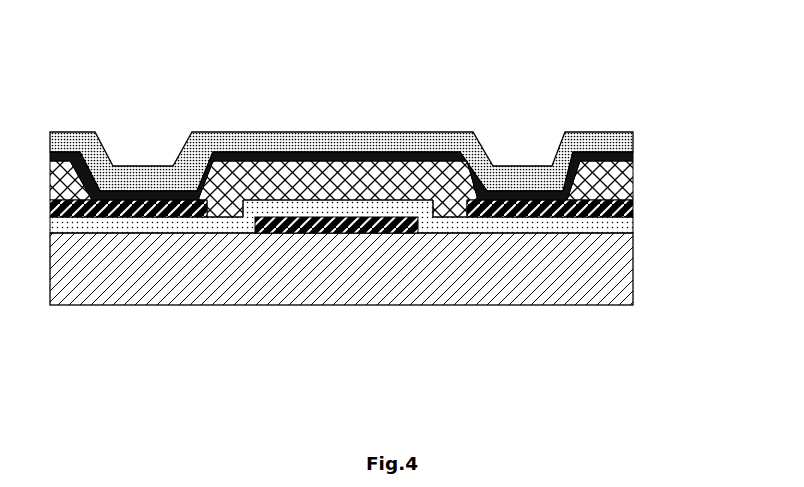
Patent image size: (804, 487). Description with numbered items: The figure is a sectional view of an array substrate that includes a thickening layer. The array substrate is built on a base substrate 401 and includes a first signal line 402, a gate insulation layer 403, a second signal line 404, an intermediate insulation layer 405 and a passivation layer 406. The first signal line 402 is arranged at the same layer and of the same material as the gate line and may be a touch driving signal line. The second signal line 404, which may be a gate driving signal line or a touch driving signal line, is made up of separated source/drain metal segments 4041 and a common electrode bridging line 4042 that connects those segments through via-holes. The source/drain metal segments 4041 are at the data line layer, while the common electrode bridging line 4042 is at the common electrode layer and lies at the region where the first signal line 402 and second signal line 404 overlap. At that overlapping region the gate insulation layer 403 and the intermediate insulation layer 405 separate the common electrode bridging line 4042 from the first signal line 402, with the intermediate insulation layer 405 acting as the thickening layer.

The base substrate 401 is at (617, 272).
The first signal line 402 is at (342, 233).
The gate insulation layer 403 is at (623, 227).
The second signal line 404 is at (341, 121).
The source/drain metal segments 4041 is at (153, 200).
The common electrode bridging line 4042 is at (338, 152).
The intermediate insulation layer 405 is at (447, 182).
The passivation layer 406 is at (617, 140).